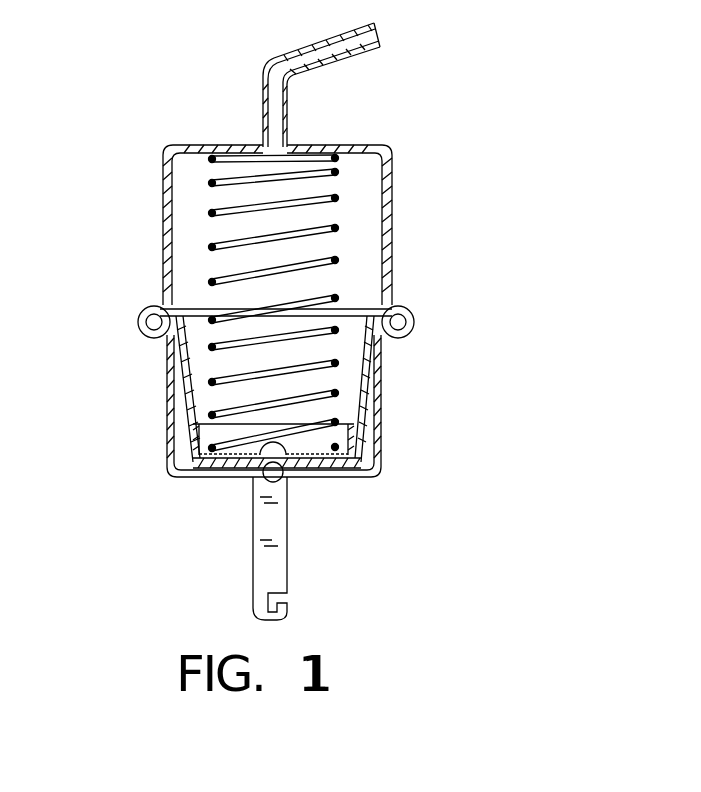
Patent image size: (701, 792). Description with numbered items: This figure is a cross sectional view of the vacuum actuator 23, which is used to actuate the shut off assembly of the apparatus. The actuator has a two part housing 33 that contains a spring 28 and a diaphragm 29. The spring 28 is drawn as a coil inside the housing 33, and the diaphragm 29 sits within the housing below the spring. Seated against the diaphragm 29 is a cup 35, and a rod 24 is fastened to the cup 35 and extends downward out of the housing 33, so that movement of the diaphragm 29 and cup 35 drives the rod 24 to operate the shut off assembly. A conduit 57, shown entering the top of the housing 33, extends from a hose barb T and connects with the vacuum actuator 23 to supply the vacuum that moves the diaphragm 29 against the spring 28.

The vacuum actuator 23 is at (165, 185).
The rod 24 is at (288, 540).
The spring 28 is at (335, 228).
The diaphragm 29 is at (363, 380).
The two part housing 33 is at (392, 246).
The cup 35 is at (350, 422).
The conduit 57 is at (360, 52).